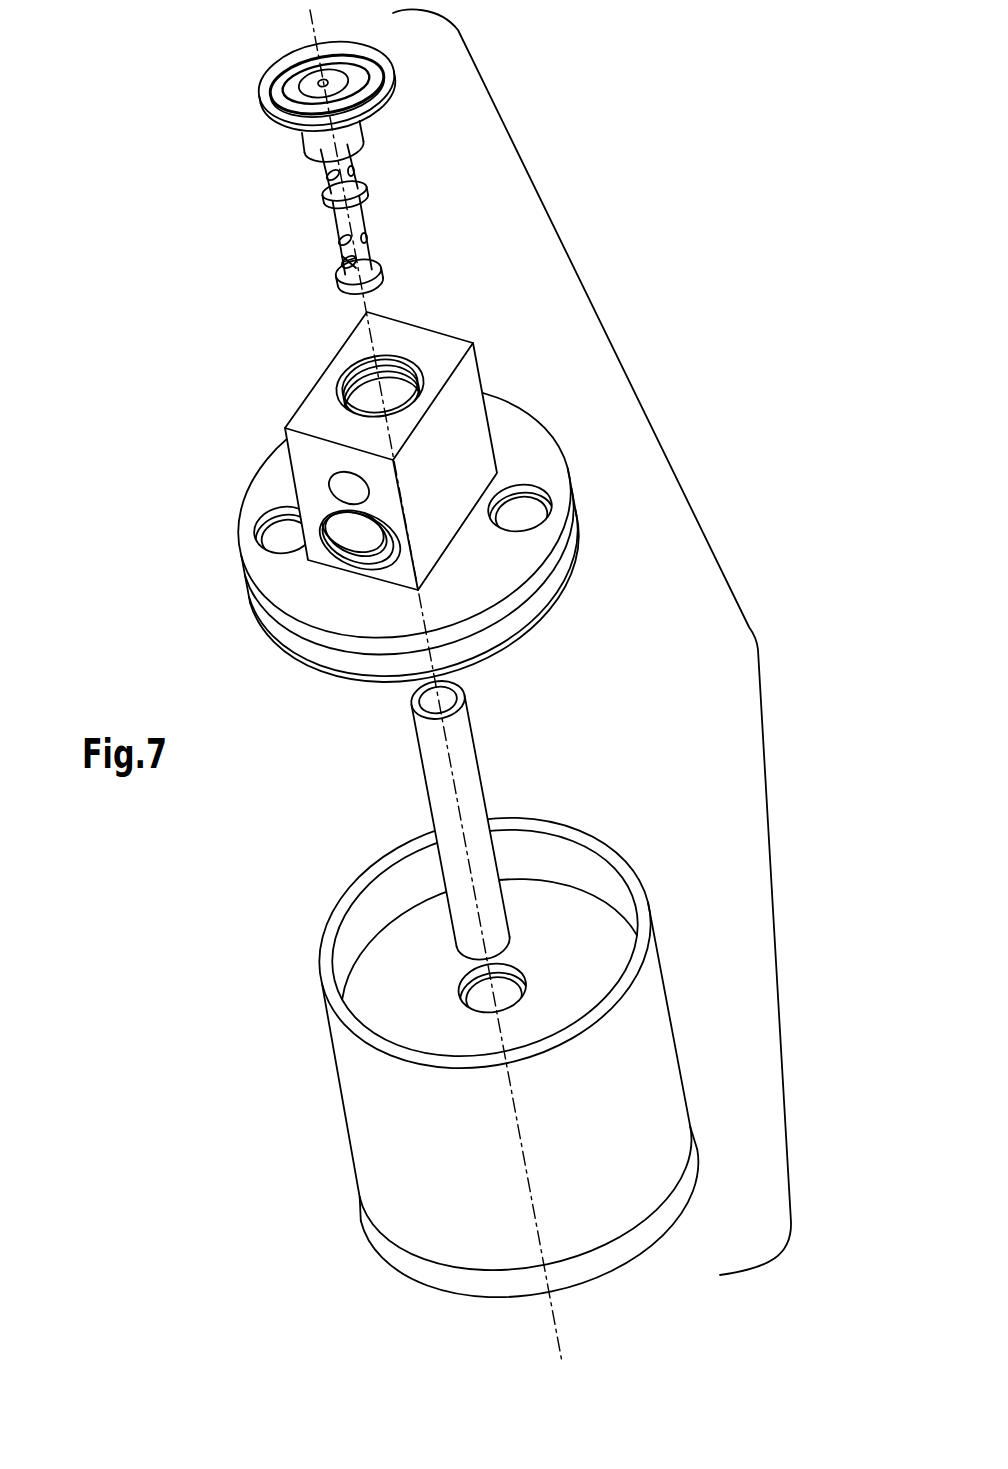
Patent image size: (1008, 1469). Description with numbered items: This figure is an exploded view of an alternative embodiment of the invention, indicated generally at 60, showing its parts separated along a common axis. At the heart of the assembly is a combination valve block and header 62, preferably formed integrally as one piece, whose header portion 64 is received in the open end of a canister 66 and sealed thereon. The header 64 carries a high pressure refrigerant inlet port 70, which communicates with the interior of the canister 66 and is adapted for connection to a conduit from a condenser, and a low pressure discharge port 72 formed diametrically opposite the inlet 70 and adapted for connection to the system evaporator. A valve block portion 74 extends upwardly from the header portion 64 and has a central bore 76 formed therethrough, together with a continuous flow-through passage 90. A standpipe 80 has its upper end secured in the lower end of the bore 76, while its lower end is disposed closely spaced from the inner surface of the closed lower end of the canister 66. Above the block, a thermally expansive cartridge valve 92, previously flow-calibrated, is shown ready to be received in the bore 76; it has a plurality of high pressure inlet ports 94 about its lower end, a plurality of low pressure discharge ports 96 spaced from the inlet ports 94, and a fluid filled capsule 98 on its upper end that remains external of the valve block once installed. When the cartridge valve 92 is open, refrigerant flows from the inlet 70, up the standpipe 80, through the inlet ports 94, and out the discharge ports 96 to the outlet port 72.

The embodiment of the invention 60 is at (800, 633).
The combination valve block and header 62 is at (230, 455).
The header portion 64 is at (283, 634).
The canister 66 is at (339, 1085).
The high pressure refrigerant inlet port 70 is at (541, 485).
The low pressure discharge port 72 is at (258, 538).
The valve block portion 74 is at (487, 388).
The central bore 76 is at (353, 358).
The standpipe 80 is at (427, 777).
The continuous flow-through passage 90 is at (297, 501).
The thermally expansive cartridge valve 92 is at (255, 150).
The high pressure inlet ports 94 is at (342, 289).
The low pressure discharge ports 96 is at (333, 238).
The fluid filled capsule 98 is at (262, 69).